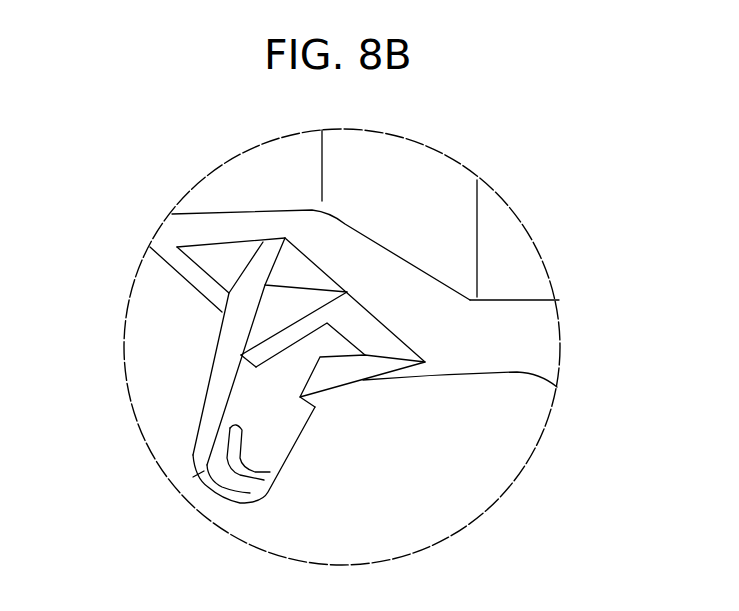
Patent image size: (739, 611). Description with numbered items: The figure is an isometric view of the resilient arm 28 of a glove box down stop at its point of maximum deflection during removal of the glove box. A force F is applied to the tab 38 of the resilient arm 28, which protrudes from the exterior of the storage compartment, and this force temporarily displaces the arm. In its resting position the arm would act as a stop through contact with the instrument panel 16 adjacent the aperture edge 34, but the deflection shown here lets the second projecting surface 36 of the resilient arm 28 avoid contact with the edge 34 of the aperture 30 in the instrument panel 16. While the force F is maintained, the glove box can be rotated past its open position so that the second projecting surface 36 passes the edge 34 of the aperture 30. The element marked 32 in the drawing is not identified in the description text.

The instrument panel 16 is at (505, 300).
The resilient arm 28 is at (196, 442).
The aperture 30 is at (200, 265).
The inclined arm 32 is at (277, 330).
The aperture edge 34 is at (307, 288).
The second projecting surface 36 is at (306, 288).
The tab 38 is at (238, 477).
The force F is at (264, 458).